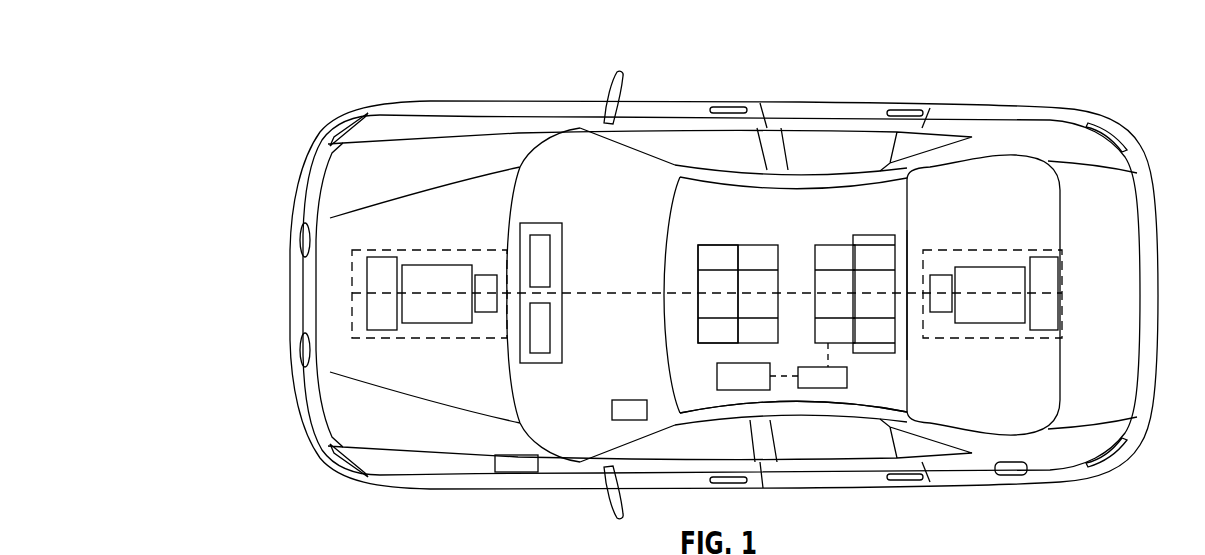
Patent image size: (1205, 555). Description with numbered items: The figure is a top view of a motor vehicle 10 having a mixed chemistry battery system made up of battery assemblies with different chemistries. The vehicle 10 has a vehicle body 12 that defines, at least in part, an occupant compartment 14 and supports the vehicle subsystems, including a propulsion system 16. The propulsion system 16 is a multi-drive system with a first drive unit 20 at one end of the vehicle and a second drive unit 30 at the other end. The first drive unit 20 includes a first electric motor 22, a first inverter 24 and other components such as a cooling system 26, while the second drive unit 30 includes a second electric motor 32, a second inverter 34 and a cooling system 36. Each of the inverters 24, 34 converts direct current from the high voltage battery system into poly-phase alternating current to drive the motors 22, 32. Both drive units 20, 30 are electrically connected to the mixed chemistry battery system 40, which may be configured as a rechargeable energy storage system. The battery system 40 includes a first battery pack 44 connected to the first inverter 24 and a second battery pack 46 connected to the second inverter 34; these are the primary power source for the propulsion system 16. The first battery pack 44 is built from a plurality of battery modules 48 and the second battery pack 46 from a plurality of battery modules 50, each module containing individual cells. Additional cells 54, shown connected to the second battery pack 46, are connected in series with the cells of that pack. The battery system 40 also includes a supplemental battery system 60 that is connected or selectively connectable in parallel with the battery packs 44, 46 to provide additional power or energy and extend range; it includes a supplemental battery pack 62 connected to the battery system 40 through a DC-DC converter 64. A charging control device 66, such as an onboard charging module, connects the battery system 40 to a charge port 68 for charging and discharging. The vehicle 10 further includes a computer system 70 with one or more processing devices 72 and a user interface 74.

The motor vehicle 10 is at (262, 90).
The vehicle body 12 is at (769, 98).
The occupant compartment 14 is at (803, 410).
The propulsion system 16 is at (418, 365).
The first drive unit 20 is at (408, 250).
The first electric motor 22 is at (443, 265).
The first inverter 24 is at (487, 313).
The cooling system 26 is at (382, 340).
The second drive unit 30 is at (1022, 250).
The second electric motor 32 is at (967, 272).
The second inverter 34 is at (941, 313).
The cooling system 36 is at (1043, 338).
The mixed chemistry battery system 40 is at (886, 294).
The first battery pack 44 is at (742, 269).
The second battery pack 46 is at (898, 332).
The battery modules 48 is at (748, 249).
The battery modules 50 is at (836, 249).
The additional cells 54 is at (873, 239).
The supplemental battery system 60 is at (742, 410).
The supplemental battery pack 62 is at (717, 368).
The DC-DC converter 64 is at (834, 390).
The charging control device 66 is at (612, 410).
The charge port 68 is at (515, 455).
The computer system 70 is at (542, 209).
The processing devices 72 is at (553, 260).
The user interface 74 is at (553, 333).